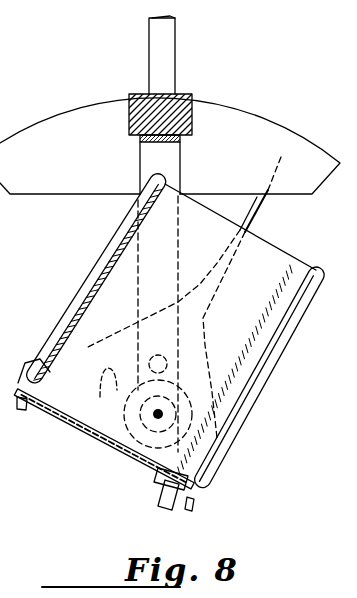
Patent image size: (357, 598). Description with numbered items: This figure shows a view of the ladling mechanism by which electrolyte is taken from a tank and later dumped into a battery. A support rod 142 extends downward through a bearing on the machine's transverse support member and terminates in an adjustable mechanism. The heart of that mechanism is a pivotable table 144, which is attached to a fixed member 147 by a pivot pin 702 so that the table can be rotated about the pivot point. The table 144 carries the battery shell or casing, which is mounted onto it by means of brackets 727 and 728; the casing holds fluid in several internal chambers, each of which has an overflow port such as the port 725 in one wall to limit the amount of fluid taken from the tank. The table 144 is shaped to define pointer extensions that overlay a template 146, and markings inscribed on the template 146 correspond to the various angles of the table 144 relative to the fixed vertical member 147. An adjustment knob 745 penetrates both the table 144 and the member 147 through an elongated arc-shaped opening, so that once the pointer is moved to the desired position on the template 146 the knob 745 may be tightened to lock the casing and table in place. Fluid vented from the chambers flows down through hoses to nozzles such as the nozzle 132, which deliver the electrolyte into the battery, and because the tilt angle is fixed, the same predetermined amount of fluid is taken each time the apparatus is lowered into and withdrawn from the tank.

The rod 142 is at (160, 53).
The template 146 is at (247, 118).
The fixed member 147 is at (176, 159).
The pivotable table 144 is at (255, 212).
The overflow port 725 is at (112, 260).
The bracket 728 is at (82, 298).
The pivot pin 702 is at (136, 352).
The bracket 727 is at (293, 330).
The adjustment knob 745 is at (137, 440).
The nozzle 132 is at (155, 497).